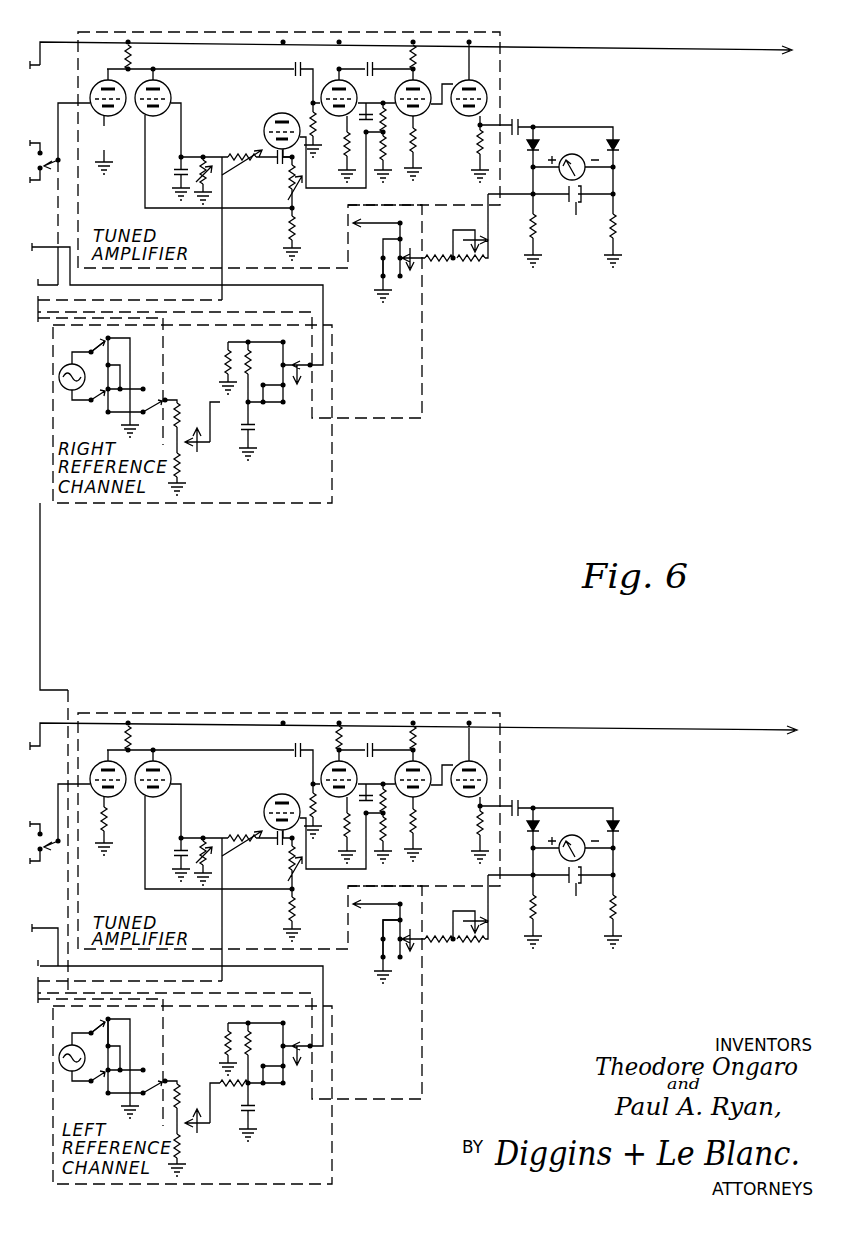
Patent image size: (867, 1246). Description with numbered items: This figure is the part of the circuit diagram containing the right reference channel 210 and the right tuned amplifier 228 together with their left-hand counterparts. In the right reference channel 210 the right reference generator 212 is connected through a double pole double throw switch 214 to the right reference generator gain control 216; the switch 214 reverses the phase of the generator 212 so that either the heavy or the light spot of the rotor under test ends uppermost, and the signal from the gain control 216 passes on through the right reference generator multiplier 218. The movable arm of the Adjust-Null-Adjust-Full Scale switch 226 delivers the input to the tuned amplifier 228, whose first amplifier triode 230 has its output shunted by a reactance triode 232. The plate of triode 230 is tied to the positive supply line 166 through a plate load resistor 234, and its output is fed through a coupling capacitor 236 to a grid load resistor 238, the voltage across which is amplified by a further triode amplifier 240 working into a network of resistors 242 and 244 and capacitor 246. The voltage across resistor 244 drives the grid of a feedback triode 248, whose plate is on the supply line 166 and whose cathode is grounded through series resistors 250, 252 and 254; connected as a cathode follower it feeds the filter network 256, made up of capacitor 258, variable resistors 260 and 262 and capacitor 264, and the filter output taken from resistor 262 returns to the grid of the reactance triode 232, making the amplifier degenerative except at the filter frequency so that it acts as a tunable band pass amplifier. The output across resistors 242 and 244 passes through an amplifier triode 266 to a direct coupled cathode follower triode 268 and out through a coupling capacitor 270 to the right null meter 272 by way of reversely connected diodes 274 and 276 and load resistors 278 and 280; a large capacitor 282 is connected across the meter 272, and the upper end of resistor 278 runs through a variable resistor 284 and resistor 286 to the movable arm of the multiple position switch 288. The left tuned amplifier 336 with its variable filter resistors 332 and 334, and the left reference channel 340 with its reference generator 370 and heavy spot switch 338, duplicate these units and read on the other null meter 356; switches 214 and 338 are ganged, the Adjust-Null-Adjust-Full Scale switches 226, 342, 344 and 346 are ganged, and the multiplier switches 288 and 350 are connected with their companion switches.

The positive supply line 166 is at (695, 50).
The right reference channel 210 is at (338, 375).
The right reference generator 212 is at (67, 390).
The double pole double throw switch 214 is at (103, 341).
The right reference generator gain control 216 is at (183, 443).
The right reference generator multiplier 218 is at (295, 391).
The Adjust-Null-Adjust-Full Scale switch 226 is at (44, 150).
The tuned amplifier 228 is at (210, 33).
The first amplifier triode 230 is at (104, 80).
The reactance triode 232 is at (171, 93).
The plate load resistor 234 is at (135, 56).
The coupling capacitor 236 is at (295, 66).
The grid load resistor 238 is at (311, 120).
The further triode amplifier 240 is at (333, 80).
The resistor 242 is at (387, 123).
The resistor 244 is at (386, 156).
The capacitor 246 is at (362, 108).
The feed back triode 248 is at (277, 113).
The resistor 250 is at (296, 160).
The resistor 252 is at (299, 205).
The resistor 254 is at (297, 228).
The filter network 256 is at (237, 133).
The capacitor 258 is at (279, 167).
The variable resistor 260 is at (243, 172).
The variable resistor 262 is at (201, 168).
The capacitor 264 is at (180, 170).
The amplifier triode 266 is at (428, 110).
The direct coupled triode 268 is at (462, 82).
The coupling capacitor 270 is at (517, 118).
The right null meter 272 is at (573, 156).
The diode 274 is at (539, 140).
The diode 276 is at (623, 147).
The load resistor 278 is at (528, 222).
The load resistor 280 is at (623, 227).
The large capacitor 282 is at (567, 213).
The variable resistor 284 is at (480, 265).
The resistor 286 is at (438, 265).
The multiple position switch 288 is at (412, 248).
The variable resistor 332 is at (242, 861).
The variable resistor 334 is at (200, 840).
The left tuned amplifier 336 is at (289, 817).
The heavy spot up or down control switch 338 is at (73, 1079).
The left reference channel 340 is at (230, 1022).
The Adjust-Null-Adjust-Full Scale switch 342 is at (40, 817).
The Adjust-Null-Adjust-Full Scale switch 344 is at (152, 406).
The Adjust-Null-Adjust-Full Scale switch 346 is at (173, 1071).
The multiplier switch 350 is at (423, 951).
The null meter 356 is at (586, 827).
The reference generator 370 is at (82, 1027).